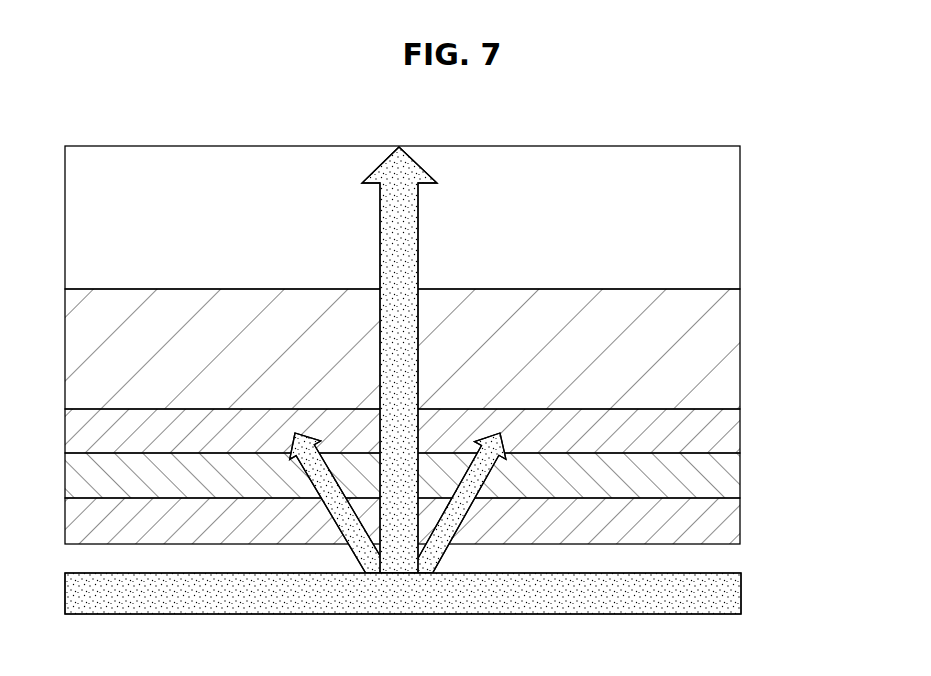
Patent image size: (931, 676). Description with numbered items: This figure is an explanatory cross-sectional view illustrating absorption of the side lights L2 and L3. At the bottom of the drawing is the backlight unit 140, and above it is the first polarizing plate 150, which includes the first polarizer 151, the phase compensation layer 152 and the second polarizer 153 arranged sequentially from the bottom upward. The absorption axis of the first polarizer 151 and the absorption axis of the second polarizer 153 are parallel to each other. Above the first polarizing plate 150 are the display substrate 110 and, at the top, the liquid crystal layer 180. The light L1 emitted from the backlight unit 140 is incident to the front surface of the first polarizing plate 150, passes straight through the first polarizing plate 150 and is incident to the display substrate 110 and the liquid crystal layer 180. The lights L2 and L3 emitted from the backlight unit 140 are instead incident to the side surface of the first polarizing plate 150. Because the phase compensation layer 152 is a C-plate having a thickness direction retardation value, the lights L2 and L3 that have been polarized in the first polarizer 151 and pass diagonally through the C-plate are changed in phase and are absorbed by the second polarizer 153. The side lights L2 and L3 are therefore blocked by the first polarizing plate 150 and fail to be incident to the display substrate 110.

The liquid crystal layer 180 is at (726, 218).
The display substrate 110 is at (726, 349).
The first polarizing plate 150 is at (470, 476).
The second polarizer 153 is at (726, 439).
The phase compensation layer 152 is at (726, 478).
The first polarizer 151 is at (440, 521).
The backlight unit 140 is at (726, 595).
The light L1 is at (407, 225).
The side light L2 is at (345, 523).
The side light L3 is at (453, 523).